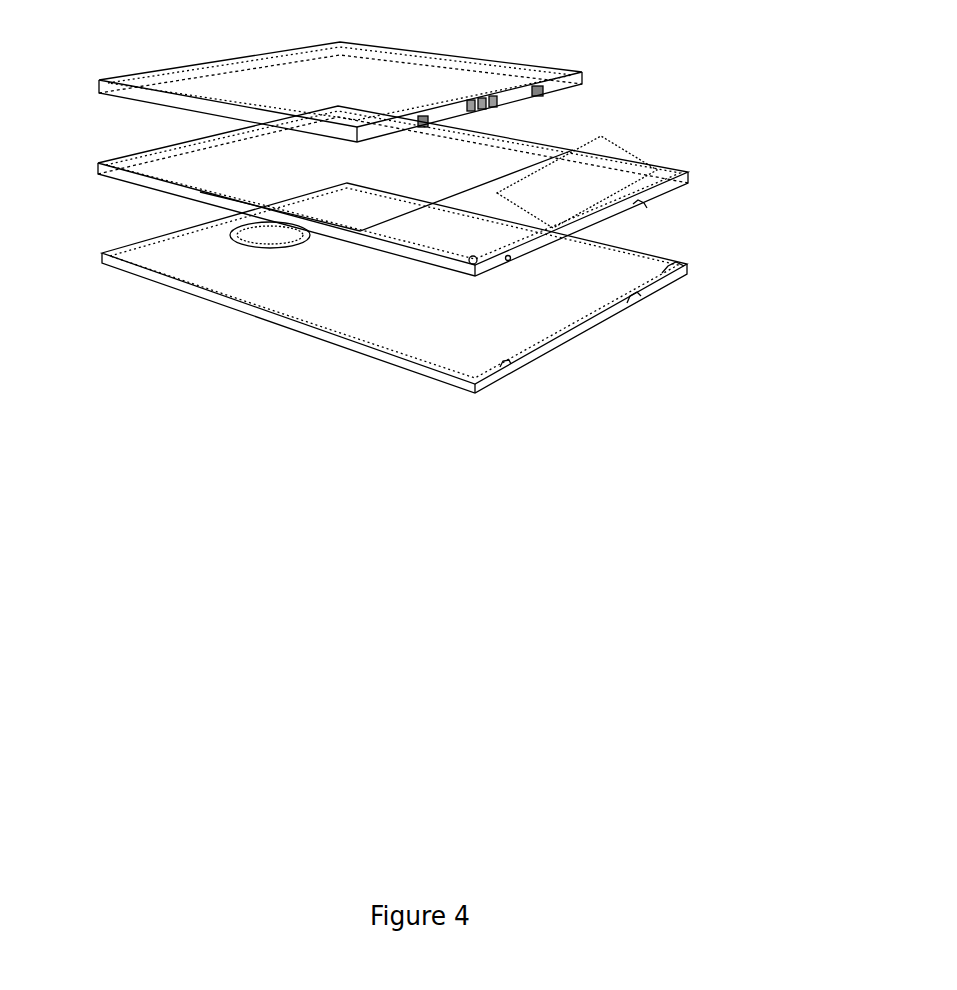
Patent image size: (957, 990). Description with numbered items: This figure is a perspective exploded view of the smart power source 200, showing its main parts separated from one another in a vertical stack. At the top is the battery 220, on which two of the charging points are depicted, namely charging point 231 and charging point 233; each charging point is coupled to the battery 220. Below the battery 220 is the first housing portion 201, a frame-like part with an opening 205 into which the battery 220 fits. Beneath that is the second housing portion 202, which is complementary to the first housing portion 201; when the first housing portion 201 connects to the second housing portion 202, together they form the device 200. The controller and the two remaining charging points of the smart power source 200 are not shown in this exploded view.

The smart power source 200 is at (594, 184).
The first housing portion 201 is at (358, 191).
The second housing portion 202 is at (438, 376).
The opening 205 is at (206, 181).
The battery 220 is at (342, 74).
The charging point 231 is at (419, 117).
The charging point 233 is at (540, 92).